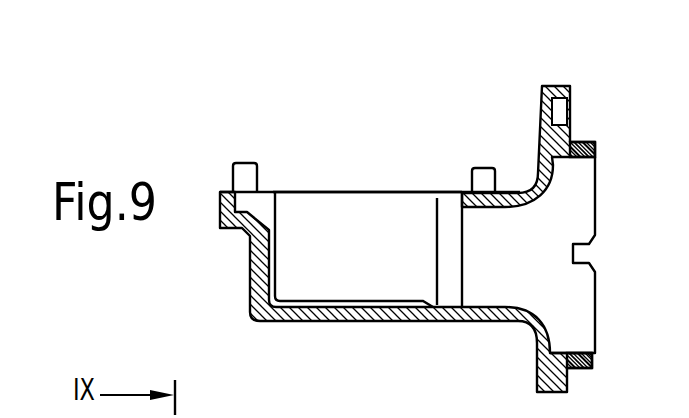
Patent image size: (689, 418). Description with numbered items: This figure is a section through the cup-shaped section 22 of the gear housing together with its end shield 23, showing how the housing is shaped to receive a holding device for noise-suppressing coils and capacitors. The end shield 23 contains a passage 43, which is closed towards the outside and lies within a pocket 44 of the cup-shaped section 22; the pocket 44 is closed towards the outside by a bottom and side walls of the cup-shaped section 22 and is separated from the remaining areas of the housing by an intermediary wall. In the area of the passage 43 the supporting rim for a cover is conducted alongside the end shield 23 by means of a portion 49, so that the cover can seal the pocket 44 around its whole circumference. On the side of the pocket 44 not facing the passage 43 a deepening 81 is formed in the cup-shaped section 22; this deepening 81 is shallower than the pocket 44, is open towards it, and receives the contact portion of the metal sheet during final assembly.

The cup-shaped section of the gear housing 22 is at (405, 318).
The end shield 23 is at (560, 84).
The passage 43 is at (512, 283).
The pocket 44 is at (398, 203).
The portion 49 is at (465, 192).
The deepening 81 is at (255, 203).